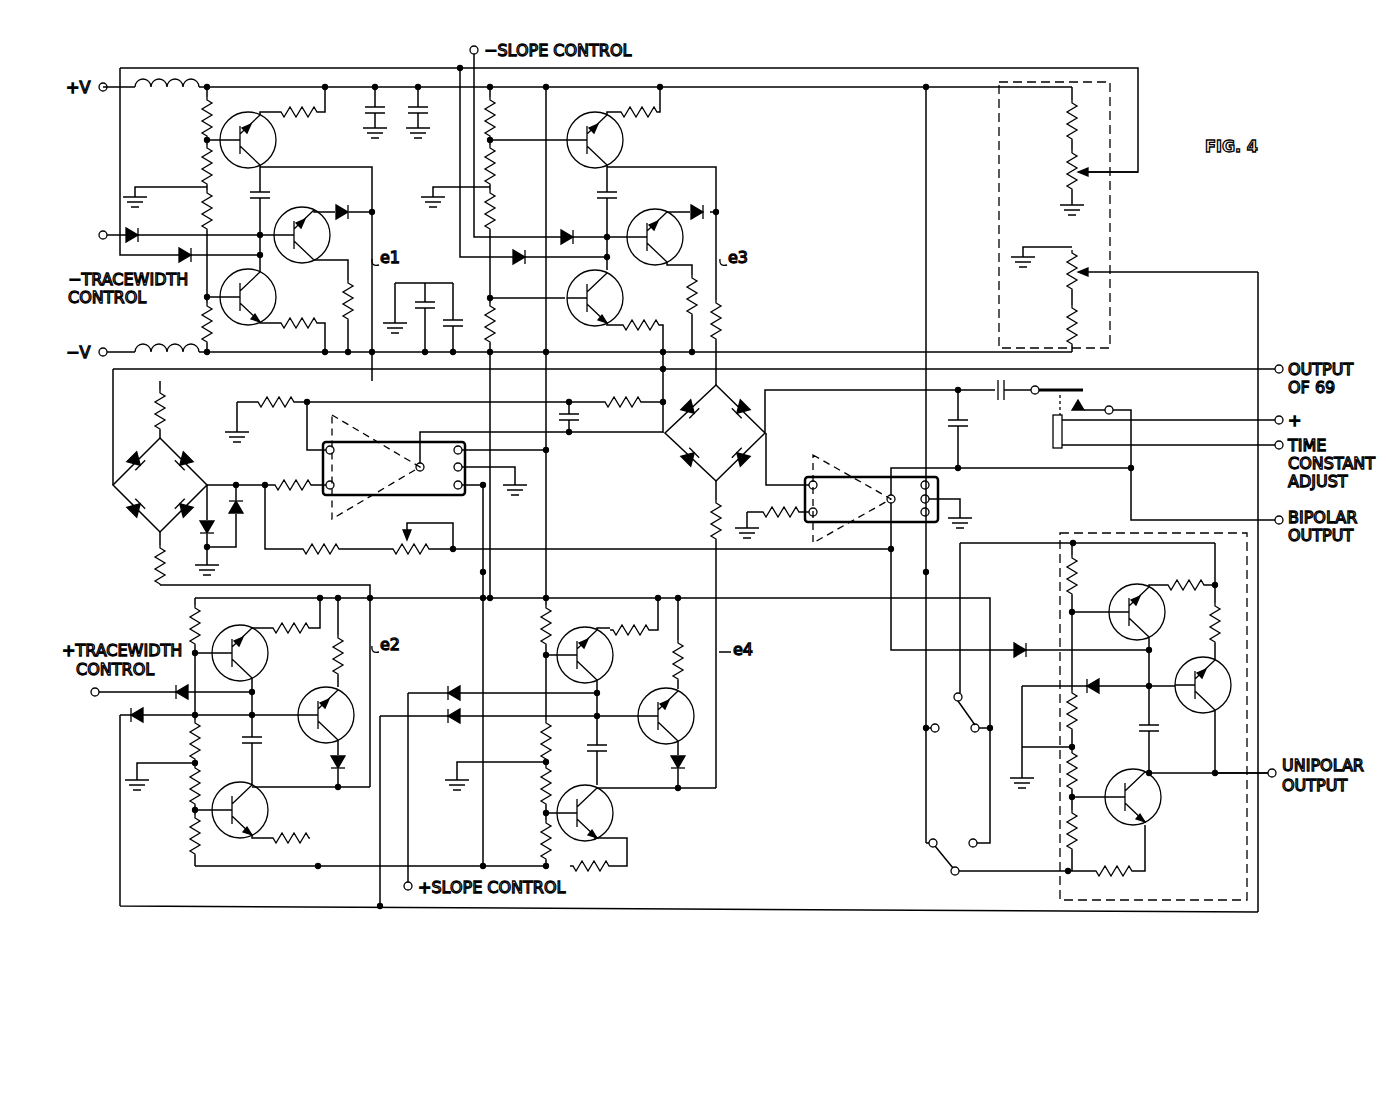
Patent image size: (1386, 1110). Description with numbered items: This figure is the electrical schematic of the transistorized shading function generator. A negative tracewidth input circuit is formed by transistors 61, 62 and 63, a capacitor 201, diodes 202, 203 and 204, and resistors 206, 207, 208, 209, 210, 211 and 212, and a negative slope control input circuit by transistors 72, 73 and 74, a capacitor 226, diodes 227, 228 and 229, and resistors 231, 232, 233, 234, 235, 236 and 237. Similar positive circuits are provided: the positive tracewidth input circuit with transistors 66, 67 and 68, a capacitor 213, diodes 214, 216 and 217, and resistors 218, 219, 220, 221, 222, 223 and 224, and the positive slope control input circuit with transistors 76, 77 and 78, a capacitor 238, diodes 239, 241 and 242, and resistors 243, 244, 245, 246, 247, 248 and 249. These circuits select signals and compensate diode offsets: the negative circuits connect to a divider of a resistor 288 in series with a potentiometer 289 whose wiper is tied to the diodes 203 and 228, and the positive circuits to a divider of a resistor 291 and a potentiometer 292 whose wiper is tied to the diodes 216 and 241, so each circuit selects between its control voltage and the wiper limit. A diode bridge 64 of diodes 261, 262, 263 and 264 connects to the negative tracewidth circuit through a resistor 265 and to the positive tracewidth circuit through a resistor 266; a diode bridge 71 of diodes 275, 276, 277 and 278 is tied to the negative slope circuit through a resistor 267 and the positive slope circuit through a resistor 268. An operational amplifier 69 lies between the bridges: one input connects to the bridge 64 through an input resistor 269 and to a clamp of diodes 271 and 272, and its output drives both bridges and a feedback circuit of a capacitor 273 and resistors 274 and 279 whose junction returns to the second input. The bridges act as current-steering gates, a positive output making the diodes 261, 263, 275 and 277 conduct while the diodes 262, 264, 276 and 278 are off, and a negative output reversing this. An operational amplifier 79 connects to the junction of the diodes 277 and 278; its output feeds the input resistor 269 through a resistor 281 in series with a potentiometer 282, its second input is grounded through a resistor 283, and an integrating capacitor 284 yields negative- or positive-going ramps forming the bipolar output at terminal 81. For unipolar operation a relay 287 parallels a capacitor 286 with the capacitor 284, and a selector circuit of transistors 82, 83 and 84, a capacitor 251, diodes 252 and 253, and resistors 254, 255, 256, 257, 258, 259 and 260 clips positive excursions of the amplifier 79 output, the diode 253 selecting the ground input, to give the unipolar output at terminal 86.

The transistor 61 is at (264, 307).
The transistor 62 is at (264, 150).
The transistor 63 is at (318, 245).
The diode bridge 64 is at (150, 494).
The transistor 66 is at (256, 820).
The transistor 67 is at (256, 663).
The transistor 68 is at (342, 725).
The operational amplifier 69 is at (359, 477).
The diode bridge 71 is at (706, 442).
The transistor 72 is at (611, 308).
The transistor 73 is at (611, 150).
The transistor 74 is at (671, 247).
The transistor 76 is at (601, 823).
The transistor 77 is at (601, 665).
The transistor 78 is at (682, 726).
The operational amplifier 79 is at (845, 509).
The terminal 81 is at (1246, 520).
The transistor 82 is at (1149, 807).
The transistor 83 is at (1153, 622).
The transistor 84 is at (1219, 695).
The terminal 86 is at (1230, 778).
The capacitor 201 is at (265, 194).
The diode 202 is at (140, 234).
The diode 203 is at (188, 253).
The diode 204 is at (331, 196).
The resistor 206 is at (201, 113).
The resistor 207 is at (202, 160).
The resistor 208 is at (212, 220).
The resistor 209 is at (199, 323).
The resistor 210 is at (305, 125).
The resistor 211 is at (283, 329).
The resistor 212 is at (345, 284).
The capacitor 213 is at (248, 748).
The diode 214 is at (185, 687).
The diode 216 is at (142, 722).
The diode 217 is at (332, 762).
The resistor 218 is at (191, 620).
The resistor 219 is at (190, 756).
The resistor 220 is at (190, 804).
The resistor 221 is at (190, 848).
The resistor 222 is at (280, 624).
The resistor 223 is at (302, 824).
The resistor 224 is at (334, 648).
The capacitor 226 is at (614, 196).
The diode 227 is at (569, 228).
The diode 228 is at (516, 268).
The diode 229 is at (698, 206).
The resistor 231 is at (498, 120).
The resistor 232 is at (497, 168).
The resistor 233 is at (500, 214).
The resistor 234 is at (497, 330).
The resistor 235 is at (648, 121).
The resistor 236 is at (632, 332).
The resistor 237 is at (686, 282).
The capacitor 238 is at (608, 754).
The diode 239 is at (456, 687).
The diode 241 is at (456, 730).
The diode 242 is at (670, 766).
The resistor 243 is at (538, 624).
The resistor 244 is at (540, 738).
The resistor 245 is at (540, 788).
The resistor 246 is at (540, 836).
The resistor 247 is at (620, 626).
The resistor 248 is at (607, 872).
The resistor 249 is at (670, 648).
The capacitor 251 is at (1154, 732).
The diode 252 is at (1025, 643).
The diode 253 is at (1098, 682).
The resistor 254 is at (1080, 572).
The resistor 255 is at (1077, 720).
The resistor 256 is at (1077, 766).
The resistor 257 is at (1074, 832).
The resistor 258 is at (1190, 584).
The resistor 259 is at (1123, 872).
The resistor 260 is at (1214, 616).
The diode 261 is at (130, 516).
The diode 262 is at (143, 452).
The diode 263 is at (184, 452).
The diode 264 is at (195, 490).
The resistor 265 is at (170, 406).
The resistor 266 is at (154, 557).
The resistor 267 is at (728, 327).
The resistor 268 is at (706, 518).
The input resistor 269 is at (286, 478).
The diode 271 is at (200, 532).
The diode 272 is at (245, 505).
The capacitor 273 is at (549, 418).
The resistor 274 is at (286, 408).
The diode 275 is at (685, 460).
The diode 276 is at (690, 403).
The diode 277 is at (740, 403).
The diode 278 is at (763, 455).
The resistor 279 is at (607, 398).
The resistor 281 is at (334, 544).
The potentiometer 282 is at (422, 558).
The resistor 283 is at (761, 507).
The capacitor 284 is at (965, 426).
The capacitor 286 is at (1003, 396).
The relay 287 is at (1050, 438).
The resistor 288 is at (1063, 118).
The potentiometer 289 is at (1062, 176).
The resistor 291 is at (1060, 324).
The potentiometer 292 is at (1064, 280).